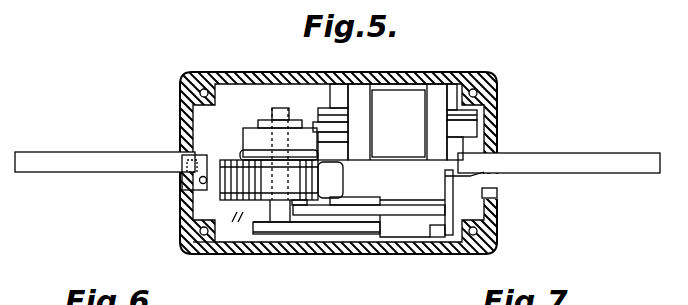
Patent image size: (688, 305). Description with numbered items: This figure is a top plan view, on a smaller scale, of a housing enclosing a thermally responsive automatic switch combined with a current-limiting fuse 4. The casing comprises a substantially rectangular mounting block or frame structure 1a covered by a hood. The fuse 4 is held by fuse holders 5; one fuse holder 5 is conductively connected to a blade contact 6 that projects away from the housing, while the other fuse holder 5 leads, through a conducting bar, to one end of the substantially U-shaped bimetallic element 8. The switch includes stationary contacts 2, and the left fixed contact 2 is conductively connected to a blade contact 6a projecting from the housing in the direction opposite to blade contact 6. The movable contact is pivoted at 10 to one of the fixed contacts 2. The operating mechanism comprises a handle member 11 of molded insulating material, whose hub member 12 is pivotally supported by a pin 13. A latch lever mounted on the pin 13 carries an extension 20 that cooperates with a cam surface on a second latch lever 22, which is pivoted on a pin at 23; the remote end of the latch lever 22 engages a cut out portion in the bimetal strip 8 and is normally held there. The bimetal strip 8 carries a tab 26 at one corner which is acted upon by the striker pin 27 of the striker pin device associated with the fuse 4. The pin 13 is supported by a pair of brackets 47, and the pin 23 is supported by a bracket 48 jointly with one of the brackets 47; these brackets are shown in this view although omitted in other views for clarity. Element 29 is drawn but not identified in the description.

The frame structure 1a is at (202, 254).
The stationary contacts 2 is at (217, 153).
The current-limiting fuse 4 is at (397, 100).
The fuse holders 5 is at (453, 110).
The blade contact 6 is at (597, 162).
The blade contact 6a is at (55, 160).
The bimetallic element 8 is at (492, 212).
The pivot 10 is at (403, 173).
The handle member 11 is at (269, 186).
The hub member 12 is at (262, 140).
The pin 13 is at (277, 232).
The extension 20 is at (322, 234).
The second latch lever 22 is at (428, 237).
The pin 23 is at (350, 215).
The tab 26 is at (493, 193).
The striker pin 27 is at (460, 172).
The spacer plate 29 is at (470, 123).
The brackets 47 is at (263, 228).
The bracket 48 is at (385, 215).